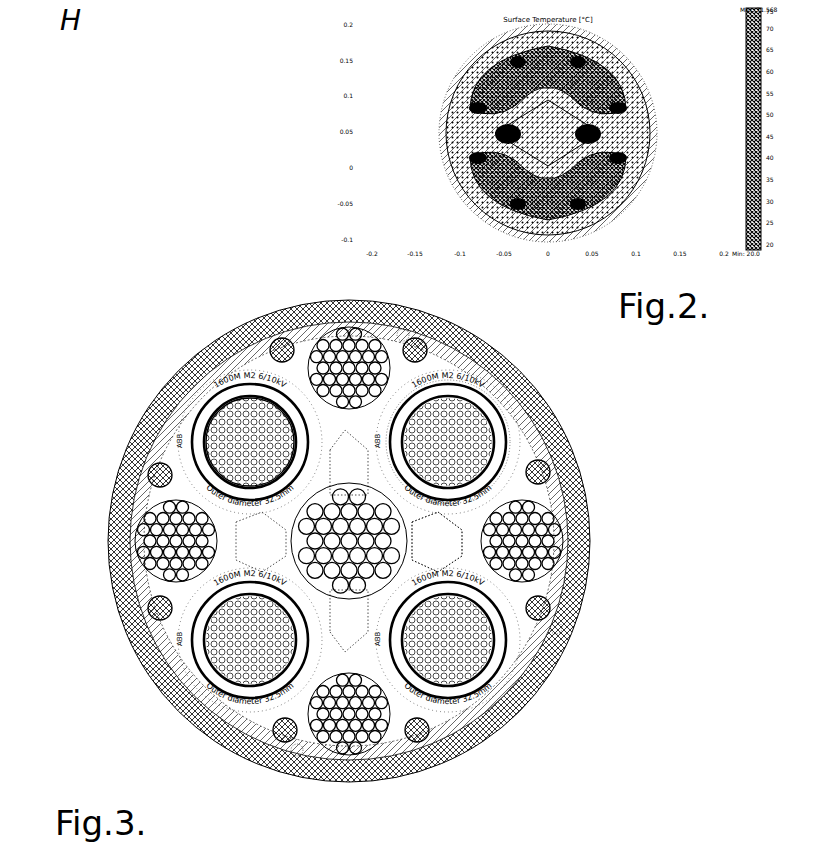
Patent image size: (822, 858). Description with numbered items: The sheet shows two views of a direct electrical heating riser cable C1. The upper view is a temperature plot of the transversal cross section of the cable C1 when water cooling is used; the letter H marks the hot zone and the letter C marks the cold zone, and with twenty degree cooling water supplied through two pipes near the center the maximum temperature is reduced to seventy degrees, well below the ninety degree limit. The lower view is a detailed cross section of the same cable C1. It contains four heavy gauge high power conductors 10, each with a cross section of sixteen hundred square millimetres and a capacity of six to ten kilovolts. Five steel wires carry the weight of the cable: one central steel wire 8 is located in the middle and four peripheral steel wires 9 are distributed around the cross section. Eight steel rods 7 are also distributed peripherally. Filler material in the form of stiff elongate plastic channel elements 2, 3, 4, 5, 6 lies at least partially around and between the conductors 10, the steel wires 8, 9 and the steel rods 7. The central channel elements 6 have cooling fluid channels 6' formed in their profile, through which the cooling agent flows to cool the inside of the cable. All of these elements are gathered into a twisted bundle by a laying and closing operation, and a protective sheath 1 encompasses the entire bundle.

In FIG. 3, the protective sheath 1 is at (262, 325).
In FIG. 3, the channel element 2 is at (157, 451).
In FIG. 3, the channel element 3 is at (300, 750).
In FIG. 3, the channel element 4 is at (615, 678).
In FIG. 3, the channel element 5 is at (298, 705).
In FIG. 3, the central channel element 6 is at (475, 432).
In FIG. 3, the cooling fluid channel 6' is at (500, 468).
In FIG. 3, the steel rod 7 is at (415, 800).
In FIG. 3, the central steel wire 8 is at (308, 535).
In FIG. 3, the peripheral steel wire 9 is at (642, 703).
In FIG. 3, the electric power conductor 10 is at (658, 653).
In FIG. 2, the hot zone H is at (615, 73).
In FIG. 2, the cold zone C is at (577, 142).
In FIG. 3, the DEH riser cable C1 is at (128, 312).